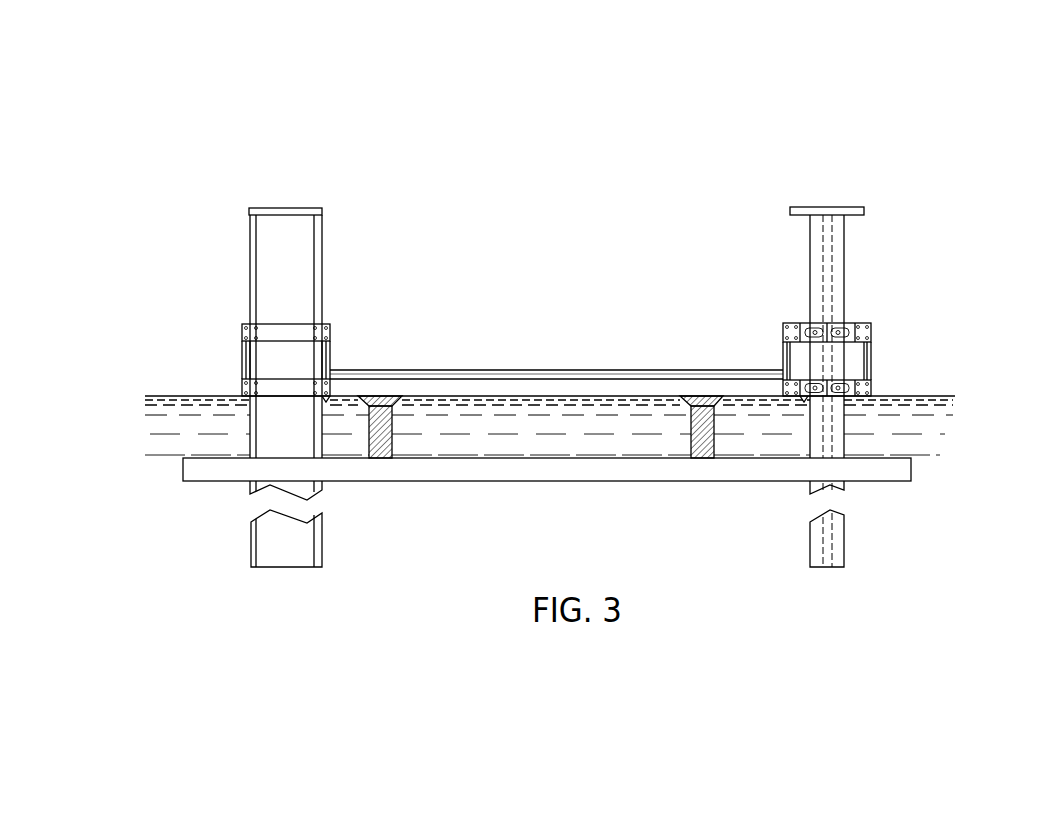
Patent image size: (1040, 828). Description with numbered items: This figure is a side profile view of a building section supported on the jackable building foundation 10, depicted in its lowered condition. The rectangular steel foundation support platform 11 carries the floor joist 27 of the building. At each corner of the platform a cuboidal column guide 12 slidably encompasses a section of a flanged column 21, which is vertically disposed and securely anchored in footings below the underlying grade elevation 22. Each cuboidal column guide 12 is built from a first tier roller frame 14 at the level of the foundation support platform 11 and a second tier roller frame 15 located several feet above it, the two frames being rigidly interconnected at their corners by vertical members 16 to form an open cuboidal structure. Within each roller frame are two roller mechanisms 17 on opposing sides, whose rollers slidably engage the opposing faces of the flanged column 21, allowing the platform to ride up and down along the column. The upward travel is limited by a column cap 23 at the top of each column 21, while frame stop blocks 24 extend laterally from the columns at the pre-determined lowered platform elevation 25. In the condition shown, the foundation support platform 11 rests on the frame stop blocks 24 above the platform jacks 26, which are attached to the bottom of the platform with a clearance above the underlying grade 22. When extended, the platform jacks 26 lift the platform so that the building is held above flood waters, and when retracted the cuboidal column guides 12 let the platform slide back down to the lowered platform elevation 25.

The jackable building foundation 10 is at (915, 170).
The foundation support platform 11 is at (556, 379).
The cuboidal column guide 12 is at (581, 392).
The first tier roller frame 14 is at (242, 388).
The second tier roller frame 15 is at (242, 330).
The vertical member 16 is at (242, 360).
The roller mechanism 17 is at (815, 322).
The flanged column 21 is at (250, 262).
The underlying grade elevation 22 is at (913, 460).
The column cap 23 is at (322, 208).
The frame stop block 24 is at (324, 398).
The lowered platform elevation 25 is at (955, 395).
The platform jack 26 is at (690, 446).
The floor joist 27 is at (627, 375).